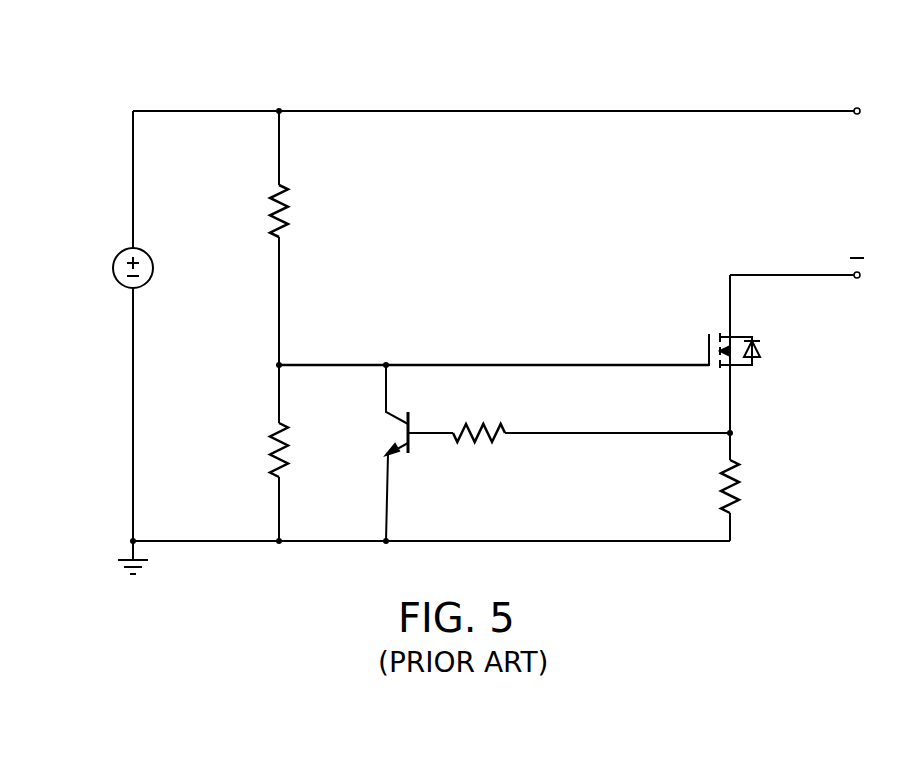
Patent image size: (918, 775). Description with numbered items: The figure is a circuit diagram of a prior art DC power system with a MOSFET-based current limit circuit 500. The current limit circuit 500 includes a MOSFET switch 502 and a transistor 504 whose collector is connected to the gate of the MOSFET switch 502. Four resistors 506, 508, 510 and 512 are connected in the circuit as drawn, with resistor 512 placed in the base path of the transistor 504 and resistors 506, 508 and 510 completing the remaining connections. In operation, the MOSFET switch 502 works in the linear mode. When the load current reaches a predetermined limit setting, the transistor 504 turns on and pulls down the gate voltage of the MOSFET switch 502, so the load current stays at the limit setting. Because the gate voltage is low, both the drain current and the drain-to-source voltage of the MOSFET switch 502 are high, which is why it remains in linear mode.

The current limit circuit 500 is at (100, 128).
The MOSFET switch 502 is at (727, 333).
The transistor 504 is at (390, 414).
The resistor 506 is at (283, 190).
The resistor 508 is at (272, 441).
The resistor 510 is at (720, 480).
The resistor 512 is at (483, 441).